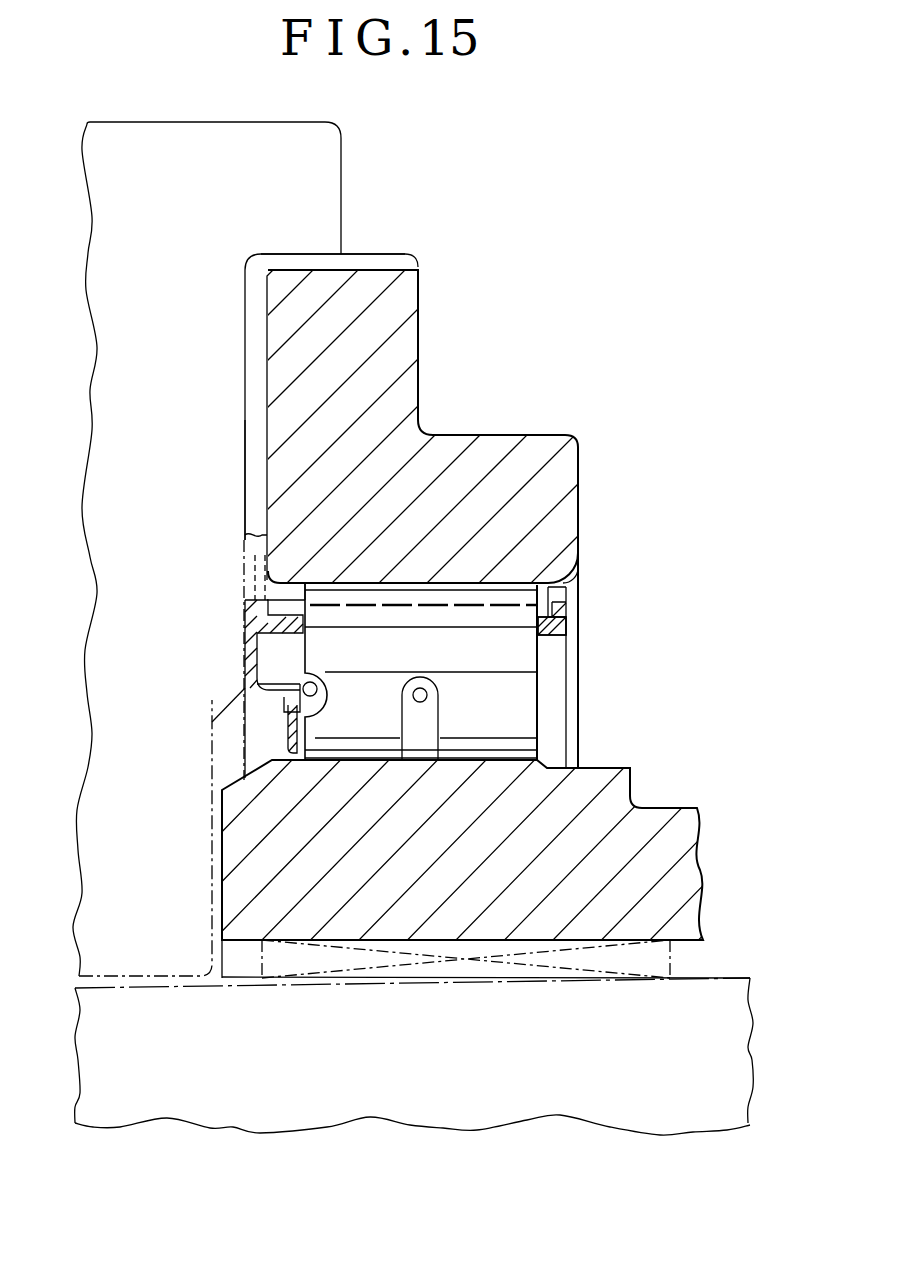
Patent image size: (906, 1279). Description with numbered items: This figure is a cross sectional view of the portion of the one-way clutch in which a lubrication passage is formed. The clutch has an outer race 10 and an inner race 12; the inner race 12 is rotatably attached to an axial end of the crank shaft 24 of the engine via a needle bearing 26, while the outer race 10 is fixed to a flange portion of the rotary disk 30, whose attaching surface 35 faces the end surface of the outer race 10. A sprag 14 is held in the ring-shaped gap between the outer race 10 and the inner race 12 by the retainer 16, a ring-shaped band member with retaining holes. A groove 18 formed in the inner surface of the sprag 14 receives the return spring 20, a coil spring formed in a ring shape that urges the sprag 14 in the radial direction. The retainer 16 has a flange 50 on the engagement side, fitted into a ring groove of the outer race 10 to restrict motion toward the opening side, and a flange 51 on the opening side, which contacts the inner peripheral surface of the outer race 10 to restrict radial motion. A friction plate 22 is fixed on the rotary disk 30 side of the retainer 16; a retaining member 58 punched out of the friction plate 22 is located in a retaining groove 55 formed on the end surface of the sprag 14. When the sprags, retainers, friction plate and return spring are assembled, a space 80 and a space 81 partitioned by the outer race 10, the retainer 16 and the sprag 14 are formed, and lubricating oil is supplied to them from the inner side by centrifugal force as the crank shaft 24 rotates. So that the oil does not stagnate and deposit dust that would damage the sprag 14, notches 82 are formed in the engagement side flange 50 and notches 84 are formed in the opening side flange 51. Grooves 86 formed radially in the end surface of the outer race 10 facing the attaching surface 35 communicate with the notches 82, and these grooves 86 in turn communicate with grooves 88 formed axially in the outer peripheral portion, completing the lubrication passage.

The outer race 10 is at (490, 447).
The inner race 12 is at (675, 843).
The sprag 14 is at (525, 667).
The retainer 16 is at (568, 612).
The groove 18 is at (440, 720).
The return spring 20 is at (440, 692).
The friction plate 22 is at (246, 668).
The crank shaft 24 is at (728, 1065).
The needle bearing 26 is at (648, 958).
The rotary disk 30 is at (324, 162).
The attaching surface 35 is at (252, 347).
The flange on the engagement side 50 is at (246, 612).
The flange on the opening side 51 is at (563, 630).
The retaining groove 55 is at (288, 710).
The retaining member 58 is at (328, 690).
The space 80 is at (293, 602).
The space 81 is at (557, 567).
The notch 82 is at (243, 581).
The notch 84 is at (568, 587).
The groove 86 is at (256, 437).
The groove 88 is at (397, 262).